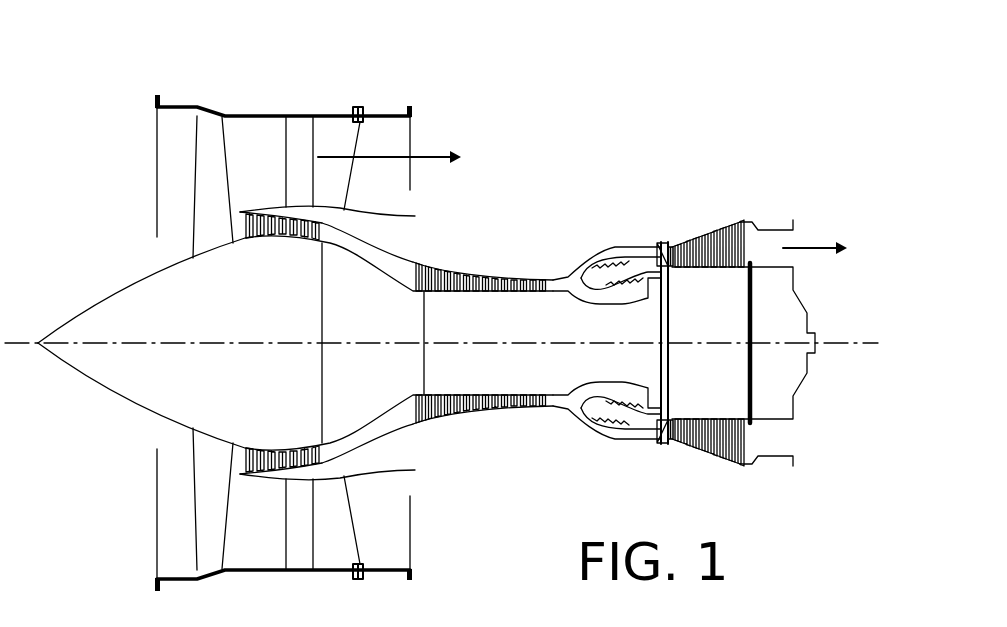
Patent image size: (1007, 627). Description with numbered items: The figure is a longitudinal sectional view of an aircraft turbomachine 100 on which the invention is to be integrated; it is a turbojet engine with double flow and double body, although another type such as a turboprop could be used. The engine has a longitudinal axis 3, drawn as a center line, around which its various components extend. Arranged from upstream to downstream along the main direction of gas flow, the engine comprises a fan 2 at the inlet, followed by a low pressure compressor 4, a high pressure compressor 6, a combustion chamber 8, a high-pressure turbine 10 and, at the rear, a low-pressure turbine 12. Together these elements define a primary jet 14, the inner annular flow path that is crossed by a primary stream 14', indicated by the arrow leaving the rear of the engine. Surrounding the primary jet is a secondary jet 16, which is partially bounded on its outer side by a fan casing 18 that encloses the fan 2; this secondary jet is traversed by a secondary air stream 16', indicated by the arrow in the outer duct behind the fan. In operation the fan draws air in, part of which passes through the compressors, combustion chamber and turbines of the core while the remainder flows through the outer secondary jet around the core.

The aircraft turbomachine 100 is at (509, 101).
The fan 2 is at (214, 120).
The fan casing 18 is at (258, 124).
The combustion chamber 8 is at (300, 133).
The secondary jet 16 is at (327, 321).
The secondary air stream 16' is at (397, 126).
The low pressure compressor 4 is at (261, 240).
The primary jet 14 is at (398, 330).
The primary stream 14' is at (824, 217).
The high pressure compressor 6 is at (486, 267).
The high-pressure turbine 10 is at (672, 243).
The low-pressure turbine 12 is at (723, 228).
The longitudinal axis 3 is at (867, 344).